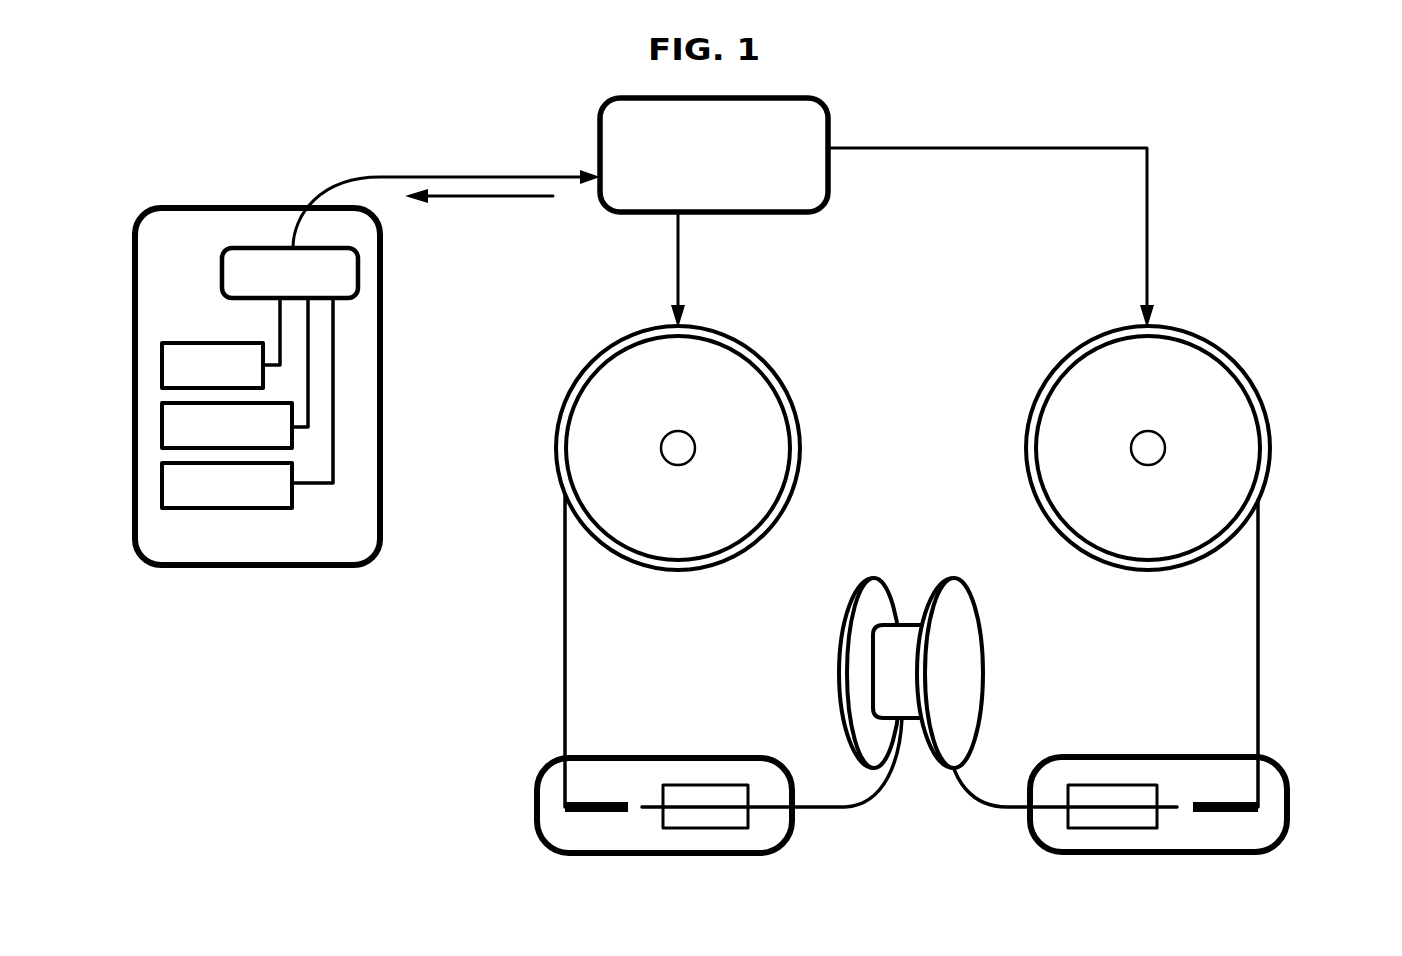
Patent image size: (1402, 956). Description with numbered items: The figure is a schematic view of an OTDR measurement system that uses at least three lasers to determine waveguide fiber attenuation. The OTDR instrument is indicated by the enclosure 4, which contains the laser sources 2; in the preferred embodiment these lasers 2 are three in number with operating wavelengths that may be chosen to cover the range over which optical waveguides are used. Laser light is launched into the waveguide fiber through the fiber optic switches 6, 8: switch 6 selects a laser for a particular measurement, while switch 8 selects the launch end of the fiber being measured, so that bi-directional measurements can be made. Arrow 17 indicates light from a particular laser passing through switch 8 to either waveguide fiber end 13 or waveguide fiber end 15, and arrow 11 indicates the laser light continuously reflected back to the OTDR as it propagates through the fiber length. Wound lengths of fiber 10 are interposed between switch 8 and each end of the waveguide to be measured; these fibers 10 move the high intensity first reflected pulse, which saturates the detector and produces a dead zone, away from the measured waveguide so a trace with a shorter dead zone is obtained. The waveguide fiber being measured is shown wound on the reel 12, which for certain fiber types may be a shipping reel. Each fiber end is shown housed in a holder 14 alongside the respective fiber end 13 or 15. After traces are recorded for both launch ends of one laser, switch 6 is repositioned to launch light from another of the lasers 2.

The laser sources 2 is at (162, 492).
The enclosure 4 is at (280, 565).
The fiber optic switch 6 is at (222, 287).
The fiber optic switch 8 is at (780, 212).
The wound lengths of fiber 10 is at (772, 366).
The arrow 11 is at (498, 196).
The reel 12 is at (963, 663).
The waveguide fiber end 13 is at (650, 805).
The cassette 14 is at (537, 818).
The waveguide fiber end 15 is at (1168, 803).
The arrow 17 is at (370, 176).